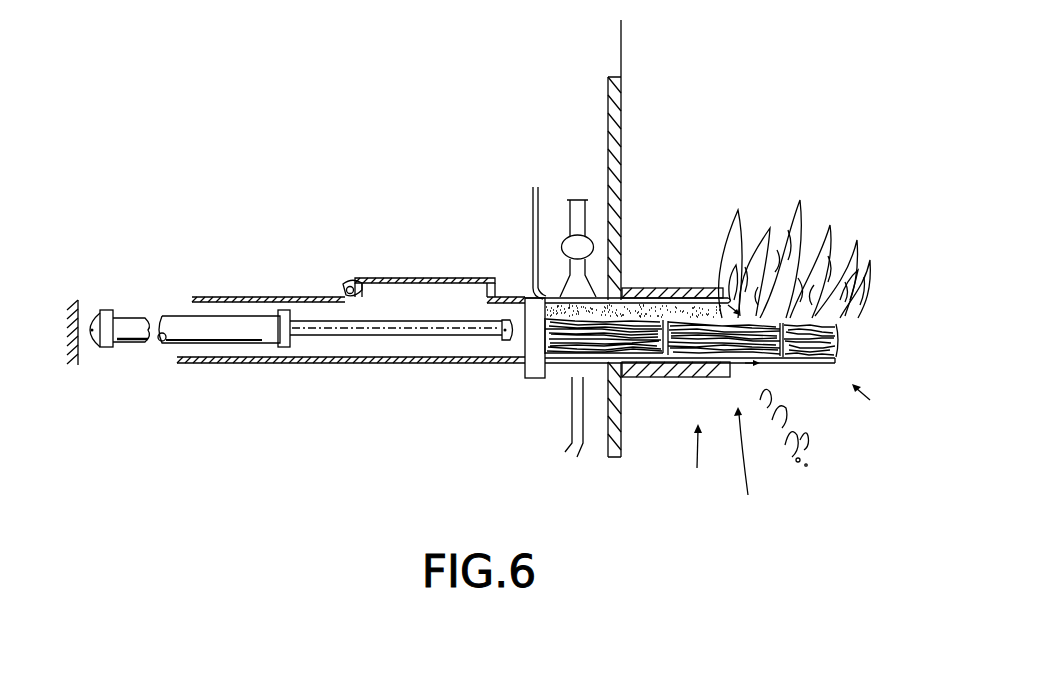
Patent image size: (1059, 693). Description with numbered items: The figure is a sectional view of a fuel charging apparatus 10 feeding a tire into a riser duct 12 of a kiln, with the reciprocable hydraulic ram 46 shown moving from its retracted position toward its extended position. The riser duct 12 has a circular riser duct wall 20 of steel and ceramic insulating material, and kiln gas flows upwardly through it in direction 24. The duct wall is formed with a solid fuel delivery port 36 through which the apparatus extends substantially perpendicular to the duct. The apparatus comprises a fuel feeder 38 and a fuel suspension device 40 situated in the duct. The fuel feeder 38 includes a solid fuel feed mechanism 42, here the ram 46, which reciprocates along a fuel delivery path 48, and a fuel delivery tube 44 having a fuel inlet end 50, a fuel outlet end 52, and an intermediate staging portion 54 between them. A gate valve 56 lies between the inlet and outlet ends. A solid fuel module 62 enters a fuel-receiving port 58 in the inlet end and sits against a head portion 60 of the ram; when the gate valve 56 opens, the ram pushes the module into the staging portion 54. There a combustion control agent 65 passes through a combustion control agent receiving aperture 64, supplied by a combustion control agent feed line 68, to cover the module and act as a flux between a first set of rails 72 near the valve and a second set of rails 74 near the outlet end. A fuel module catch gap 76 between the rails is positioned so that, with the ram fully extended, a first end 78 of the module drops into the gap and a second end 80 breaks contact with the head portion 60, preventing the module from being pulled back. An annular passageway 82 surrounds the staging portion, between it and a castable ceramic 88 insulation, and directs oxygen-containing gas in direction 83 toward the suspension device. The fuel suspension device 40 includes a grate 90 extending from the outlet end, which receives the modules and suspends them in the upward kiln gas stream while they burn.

The fuel charging apparatus 10 is at (334, 221).
The riser duct 12 is at (622, 95).
The riser duct wall 20 is at (623, 438).
The direction of kiln gas flow 24 is at (814, 406).
The solid fuel delivery port 36 is at (627, 297).
The fuel feeder 38 is at (189, 231).
The fuel suspension device 40 is at (881, 397).
The solid fuel feed mechanism 42 is at (134, 325).
The fuel delivery tube 44 is at (485, 364).
The reciprocable hydraulic ram 46 is at (180, 340).
The fuel delivery path 48 is at (312, 330).
The fuel inlet end 50 is at (375, 280).
The fuel outlet end 52 is at (725, 290).
The intermediate staging portion 54 is at (653, 297).
The gate valve 56 is at (533, 203).
The fuel-receiving port 58 is at (345, 282).
The head portion 60 is at (532, 350).
The solid fuel module 62 is at (857, 313).
The combustion control agent receiving aperture 64 is at (537, 285).
The combustion control agent 65 is at (665, 340).
The combustion control agent feed line 68 is at (570, 205).
The first set of rails 72 is at (570, 412).
The second set of rails 74 is at (730, 364).
The fuel module catch gap 76 is at (651, 365).
The first end 78 is at (678, 376).
The second end 80 is at (540, 328).
The annular passageway 82 is at (621, 296).
The direction of oxygen-containing gas 83 is at (750, 364).
The castable ceramic 88 is at (710, 377).
The grate 90 is at (833, 362).